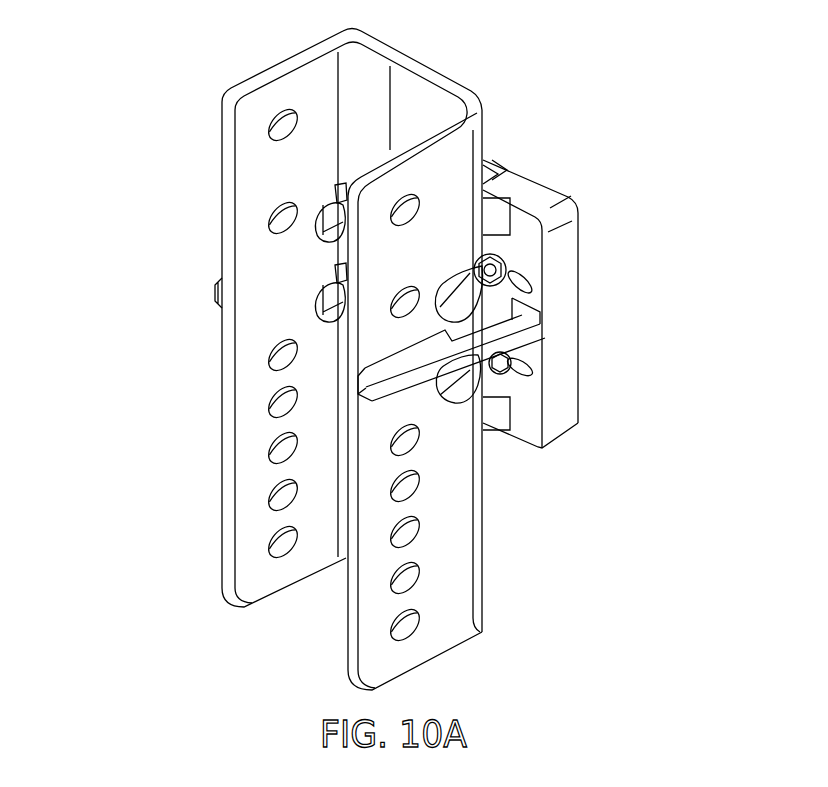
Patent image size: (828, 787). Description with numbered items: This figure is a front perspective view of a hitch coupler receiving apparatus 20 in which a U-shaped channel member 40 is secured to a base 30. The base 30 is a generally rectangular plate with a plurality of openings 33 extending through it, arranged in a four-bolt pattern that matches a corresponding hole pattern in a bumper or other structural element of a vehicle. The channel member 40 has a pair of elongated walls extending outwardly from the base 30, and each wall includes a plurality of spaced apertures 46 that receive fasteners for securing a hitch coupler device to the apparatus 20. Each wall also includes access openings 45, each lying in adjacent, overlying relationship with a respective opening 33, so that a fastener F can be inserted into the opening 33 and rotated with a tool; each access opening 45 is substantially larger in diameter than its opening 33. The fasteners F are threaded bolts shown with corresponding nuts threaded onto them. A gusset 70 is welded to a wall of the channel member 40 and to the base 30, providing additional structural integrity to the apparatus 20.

The hitch coupler receiving apparatus 20 is at (157, 463).
The base 30 is at (585, 233).
The openings 33 is at (533, 287).
The U-shaped channel member 40 is at (443, 63).
The access openings 45 is at (316, 210).
The apertures 46 is at (270, 360).
The gussets 70 is at (520, 328).
The fastener F is at (336, 190).